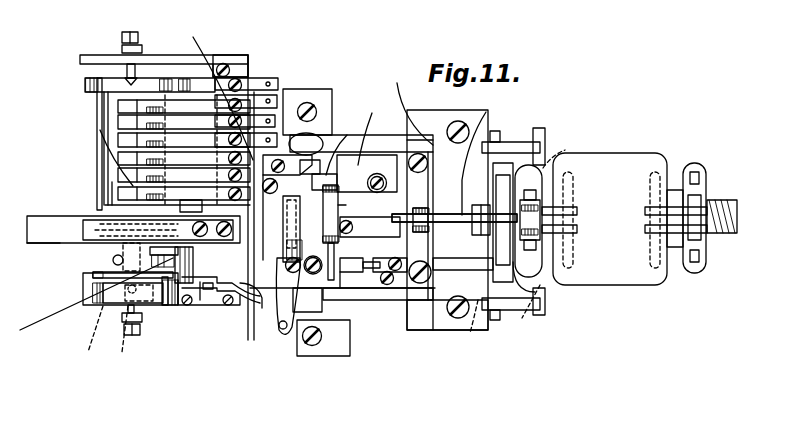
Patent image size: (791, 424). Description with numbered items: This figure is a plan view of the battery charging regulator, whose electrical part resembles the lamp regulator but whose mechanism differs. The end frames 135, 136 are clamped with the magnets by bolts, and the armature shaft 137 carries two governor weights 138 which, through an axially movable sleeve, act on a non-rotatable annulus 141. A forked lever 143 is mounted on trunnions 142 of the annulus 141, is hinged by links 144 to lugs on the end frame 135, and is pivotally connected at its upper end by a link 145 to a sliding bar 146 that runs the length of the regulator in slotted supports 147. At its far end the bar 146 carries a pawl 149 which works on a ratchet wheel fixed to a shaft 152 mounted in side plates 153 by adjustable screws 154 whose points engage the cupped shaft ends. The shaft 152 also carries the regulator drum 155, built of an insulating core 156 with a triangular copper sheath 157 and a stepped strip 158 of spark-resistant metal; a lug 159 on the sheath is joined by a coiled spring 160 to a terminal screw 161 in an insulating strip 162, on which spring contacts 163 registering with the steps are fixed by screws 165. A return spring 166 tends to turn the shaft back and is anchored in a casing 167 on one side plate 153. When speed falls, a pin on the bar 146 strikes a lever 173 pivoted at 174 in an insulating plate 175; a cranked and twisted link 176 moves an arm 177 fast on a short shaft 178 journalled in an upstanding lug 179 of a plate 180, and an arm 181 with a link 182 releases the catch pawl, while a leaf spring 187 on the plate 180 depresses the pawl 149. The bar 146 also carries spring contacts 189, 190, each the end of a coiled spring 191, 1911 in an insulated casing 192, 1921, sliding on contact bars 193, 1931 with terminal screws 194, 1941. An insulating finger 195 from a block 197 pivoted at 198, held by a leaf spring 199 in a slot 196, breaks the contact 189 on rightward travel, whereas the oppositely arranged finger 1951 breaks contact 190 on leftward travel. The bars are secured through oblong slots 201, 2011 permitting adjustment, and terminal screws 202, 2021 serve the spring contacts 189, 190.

The end frame 135 is at (421, 298).
The end frame 136 is at (296, 338).
The armature shaft 137 is at (722, 200).
The governor weights 138 is at (630, 219).
The non-rotatable annulus 141 is at (494, 278).
The trunnions 142 is at (535, 241).
The forked lever 143 is at (485, 160).
The links 144 is at (538, 133).
The link 145 is at (491, 153).
The sliding bar 146 is at (133, 229).
The slotted supports 147 is at (408, 103).
The pawl 149 is at (118, 226).
The shaft 152 is at (113, 262).
The side plates 153 is at (96, 55).
The adjustable screws 154 is at (131, 33).
The regulator drum 155 is at (104, 135).
The insulating core 156 is at (97, 190).
The triangular copper sheath 157 is at (108, 115).
The stepped strip 158 is at (118, 146).
The lug 159 is at (97, 97).
The coiled spring 160 is at (86, 80).
The terminal screw 161 is at (250, 80).
The insulating strip 162 is at (258, 56).
The spring contacts 163 is at (125, 162).
The screws 165 is at (252, 104).
The pivot pin 166 is at (104, 336).
The casing 167 is at (92, 285).
The lever 173 is at (312, 358).
The pivot 174 is at (286, 266).
The insulating plate 175 is at (432, 122).
The cranked and twisted link 176 is at (250, 306).
The arm 177 is at (202, 306).
The short shaft 178 is at (192, 306).
The upstanding lug 179 is at (194, 263).
The plate 180 is at (218, 304).
The arm 181 is at (170, 306).
The link 182 is at (86, 303).
The leaf spring 187 is at (83, 238).
The spring contact 189 is at (316, 170).
The spring contact 190 is at (350, 280).
The coiled spring 191 is at (308, 227).
The casing 192 is at (340, 224).
The metal contact bar 193 is at (454, 207).
The terminal screw 194 is at (387, 184).
The finger 195 is at (348, 145).
The slot 196 is at (370, 282).
The block of insulating material 197 is at (376, 129).
The pivot 198 is at (347, 317).
The leaf spring 199 is at (295, 196).
The oblong slots 201 is at (308, 88).
The terminal screws 202 is at (278, 249).
The coiled spring 1911 is at (363, 255).
The casing 1921 is at (366, 202).
The metal contact bar 1931 is at (398, 283).
The terminal screw 1941 is at (437, 265).
The finger 1951 is at (438, 232).
The oblong slot 2011 is at (334, 326).
The terminal screw 2021 is at (371, 224).